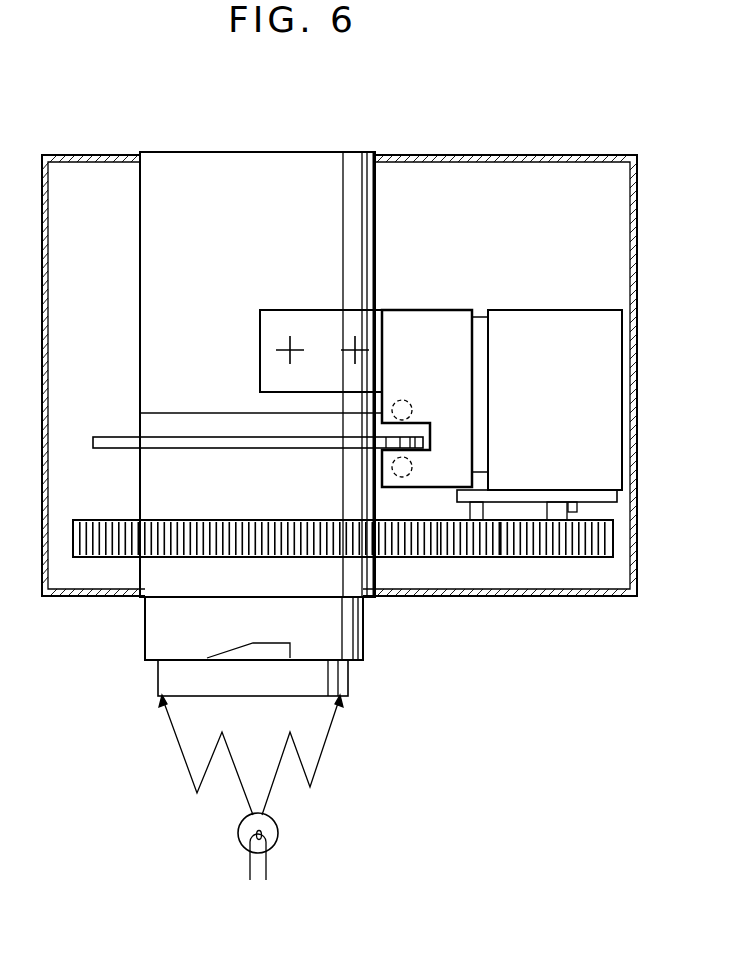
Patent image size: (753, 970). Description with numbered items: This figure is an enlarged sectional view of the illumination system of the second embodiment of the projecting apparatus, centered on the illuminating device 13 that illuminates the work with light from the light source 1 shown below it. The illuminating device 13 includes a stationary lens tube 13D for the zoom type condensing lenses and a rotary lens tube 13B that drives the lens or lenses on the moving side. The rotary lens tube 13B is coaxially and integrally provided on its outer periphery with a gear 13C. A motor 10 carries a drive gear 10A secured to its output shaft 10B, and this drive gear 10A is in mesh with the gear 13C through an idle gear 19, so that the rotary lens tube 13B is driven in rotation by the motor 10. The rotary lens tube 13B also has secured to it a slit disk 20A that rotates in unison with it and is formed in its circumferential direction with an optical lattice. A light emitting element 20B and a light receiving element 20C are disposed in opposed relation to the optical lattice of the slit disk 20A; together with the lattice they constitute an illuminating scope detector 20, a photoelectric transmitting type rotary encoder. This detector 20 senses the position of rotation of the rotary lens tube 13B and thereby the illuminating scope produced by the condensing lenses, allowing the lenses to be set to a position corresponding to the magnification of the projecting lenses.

The light source 1 is at (278, 843).
The motor 10 is at (549, 309).
The drive gear 10A is at (550, 557).
The output shaft 10B is at (575, 512).
The illuminating device 13 is at (368, 139).
The rotary lens tube 13B is at (148, 592).
The gear 13C is at (78, 558).
The stationary lens tube 13D is at (302, 150).
The idle gear 19 is at (468, 557).
The illuminating scope detector 20 is at (456, 303).
The slit disk 20A is at (107, 437).
The light emitting element 20B is at (407, 399).
The light receiving element 20C is at (402, 477).